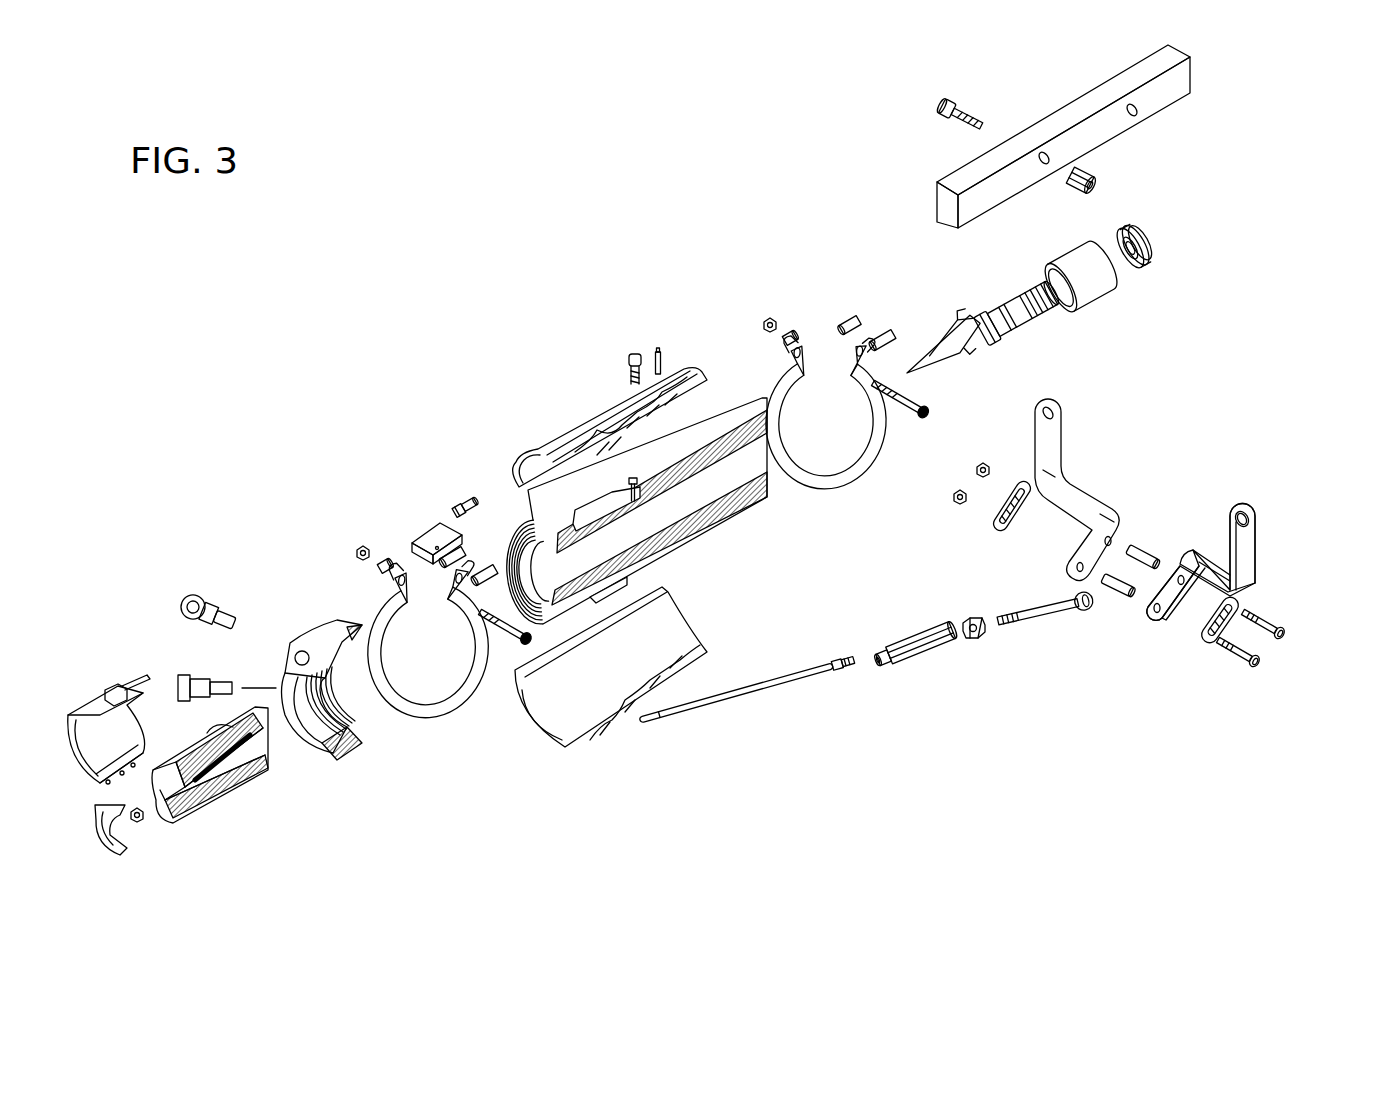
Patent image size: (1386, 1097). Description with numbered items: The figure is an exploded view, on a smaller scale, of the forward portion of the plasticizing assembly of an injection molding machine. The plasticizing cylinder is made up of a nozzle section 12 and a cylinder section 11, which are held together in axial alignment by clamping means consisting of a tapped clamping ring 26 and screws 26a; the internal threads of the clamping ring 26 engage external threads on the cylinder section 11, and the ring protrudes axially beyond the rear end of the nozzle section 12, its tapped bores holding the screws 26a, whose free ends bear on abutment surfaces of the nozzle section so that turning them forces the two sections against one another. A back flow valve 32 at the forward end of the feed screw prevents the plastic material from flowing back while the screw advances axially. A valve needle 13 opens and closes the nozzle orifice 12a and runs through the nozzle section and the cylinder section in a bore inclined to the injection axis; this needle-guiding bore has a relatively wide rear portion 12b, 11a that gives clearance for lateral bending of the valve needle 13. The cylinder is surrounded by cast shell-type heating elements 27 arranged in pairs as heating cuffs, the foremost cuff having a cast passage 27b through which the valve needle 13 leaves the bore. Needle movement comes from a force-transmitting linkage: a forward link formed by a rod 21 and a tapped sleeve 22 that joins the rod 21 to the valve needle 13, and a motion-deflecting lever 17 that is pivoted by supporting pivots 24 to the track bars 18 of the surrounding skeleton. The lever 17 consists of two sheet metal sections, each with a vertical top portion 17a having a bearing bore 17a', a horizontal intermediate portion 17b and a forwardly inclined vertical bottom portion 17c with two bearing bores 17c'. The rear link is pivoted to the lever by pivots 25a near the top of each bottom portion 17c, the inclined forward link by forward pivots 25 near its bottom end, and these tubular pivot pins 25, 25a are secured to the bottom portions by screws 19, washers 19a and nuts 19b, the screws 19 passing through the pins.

The cylinder section 11 is at (747, 497).
The relatively wide rear portion of the needle-guiding bore 11a is at (627, 578).
The nozzle section 12 is at (197, 813).
The nozzle orifice 12a is at (142, 823).
The relatively wide rear portion of the needle-guiding bore 12b is at (247, 785).
The valve needle 13 is at (783, 680).
The motion-deflecting lever 17 is at (1262, 535).
The vertical top portion 17a is at (1292, 547).
The bearing bore 17a' is at (1286, 485).
The horizontal intermediate portion 17b is at (1207, 563).
The forwardly inclined vertical bottom portion 17c is at (1176, 629).
The bearing bores 17c' is at (1051, 493).
The track bars 18 is at (1100, 137).
The screws 19 is at (1263, 672).
The washers 19a is at (1202, 642).
The nuts 19b is at (957, 500).
The rod 21 is at (1052, 603).
The tapped sleeve 22 is at (925, 648).
The supporting pivots 24 is at (1068, 186).
The forward pivots 25 is at (1112, 600).
The pivots 25a is at (1142, 550).
The clamping ring 26 is at (328, 628).
The screws 26a is at (185, 685).
The heating elements 27 is at (555, 710).
The passage 27b is at (603, 723).
The back flow valve 32 is at (973, 380).